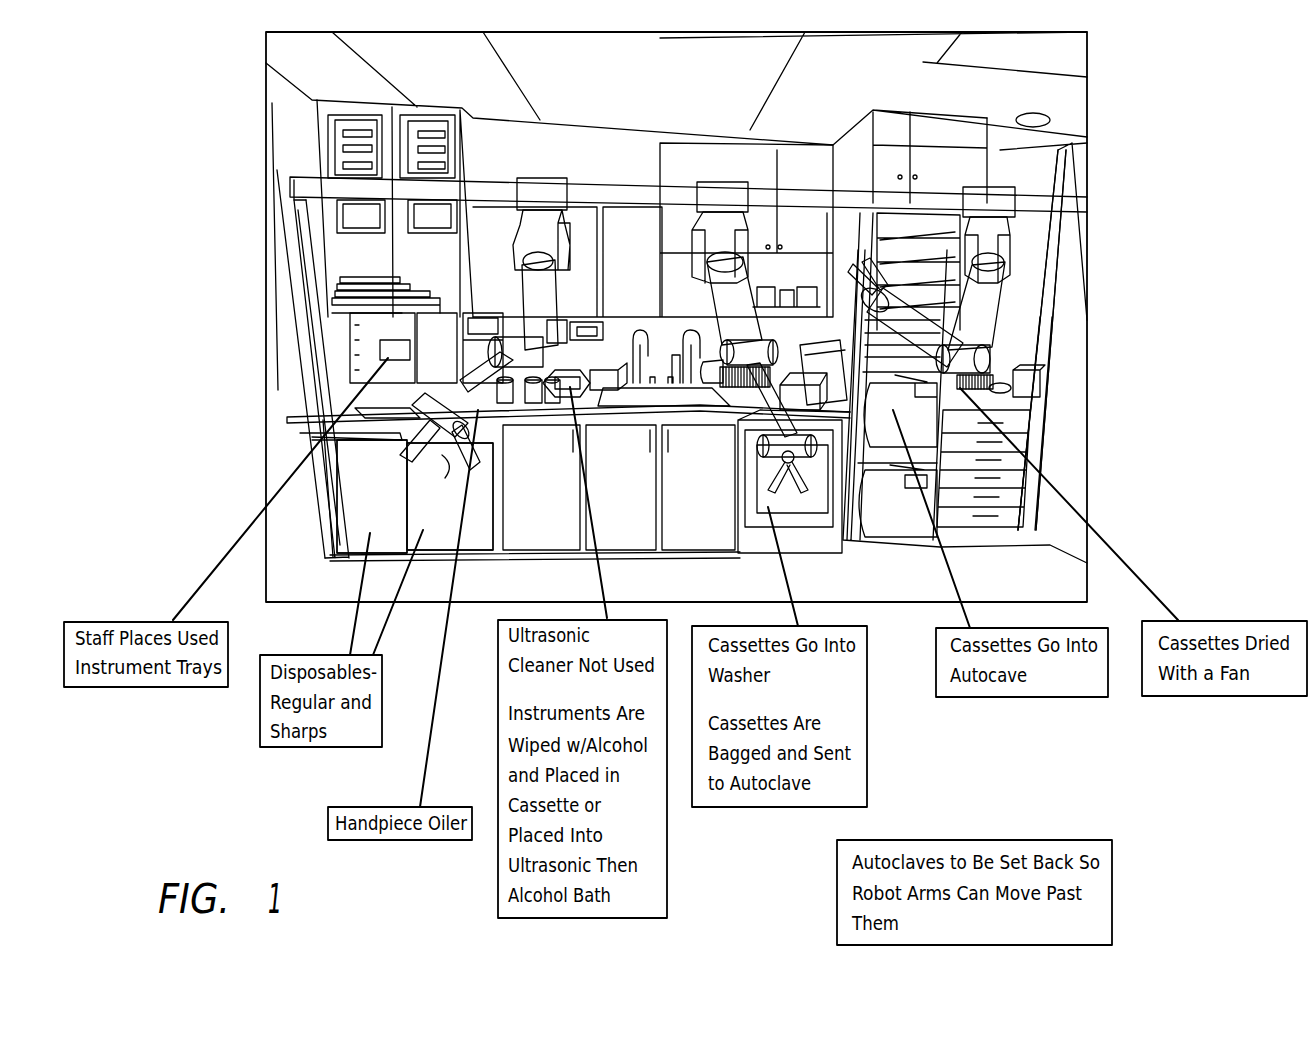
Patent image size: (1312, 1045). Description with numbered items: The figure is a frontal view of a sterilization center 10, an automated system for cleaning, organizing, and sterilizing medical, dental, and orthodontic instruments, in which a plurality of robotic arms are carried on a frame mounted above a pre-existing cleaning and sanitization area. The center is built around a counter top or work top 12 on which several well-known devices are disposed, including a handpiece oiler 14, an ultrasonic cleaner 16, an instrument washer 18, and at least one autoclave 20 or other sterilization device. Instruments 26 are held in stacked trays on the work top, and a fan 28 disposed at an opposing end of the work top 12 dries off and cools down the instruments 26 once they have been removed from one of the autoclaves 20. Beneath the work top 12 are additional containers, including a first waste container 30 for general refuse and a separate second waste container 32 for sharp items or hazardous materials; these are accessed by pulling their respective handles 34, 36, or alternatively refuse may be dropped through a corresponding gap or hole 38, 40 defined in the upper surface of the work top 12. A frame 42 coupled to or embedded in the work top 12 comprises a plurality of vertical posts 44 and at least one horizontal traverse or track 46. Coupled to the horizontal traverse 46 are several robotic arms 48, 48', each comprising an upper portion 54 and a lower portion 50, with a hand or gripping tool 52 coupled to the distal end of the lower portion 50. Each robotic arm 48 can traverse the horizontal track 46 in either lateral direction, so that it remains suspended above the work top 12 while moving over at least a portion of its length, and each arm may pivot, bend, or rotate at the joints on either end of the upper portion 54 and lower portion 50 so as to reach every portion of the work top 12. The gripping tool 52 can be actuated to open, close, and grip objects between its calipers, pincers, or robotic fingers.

The sterilization center 10 is at (1098, 145).
The work top 12 is at (740, 395).
The handpiece oiler 14 is at (482, 345).
The ultrasonic cleaner 16 is at (570, 367).
The instrument washer 18 is at (760, 493).
The autoclave 20 is at (393, 327).
The instruments 26 is at (388, 358).
The fan 28 is at (960, 392).
The first waste container 30 is at (480, 533).
The second waste container 32 is at (367, 488).
The handle 34 is at (478, 433).
The handle 36 is at (350, 438).
The gap or hole 38 is at (400, 416).
The gap or hole 40 is at (478, 412).
The frame 42 is at (1093, 180).
The vertical posts 44 is at (300, 268).
The horizontal traverse or track 46 is at (808, 200).
The robotic arm 48 is at (551, 161).
The robotic arm 48' is at (754, 258).
The lower portion 50 is at (477, 410).
The gripping tool 52 is at (431, 481).
The upper portion 54 is at (538, 282).